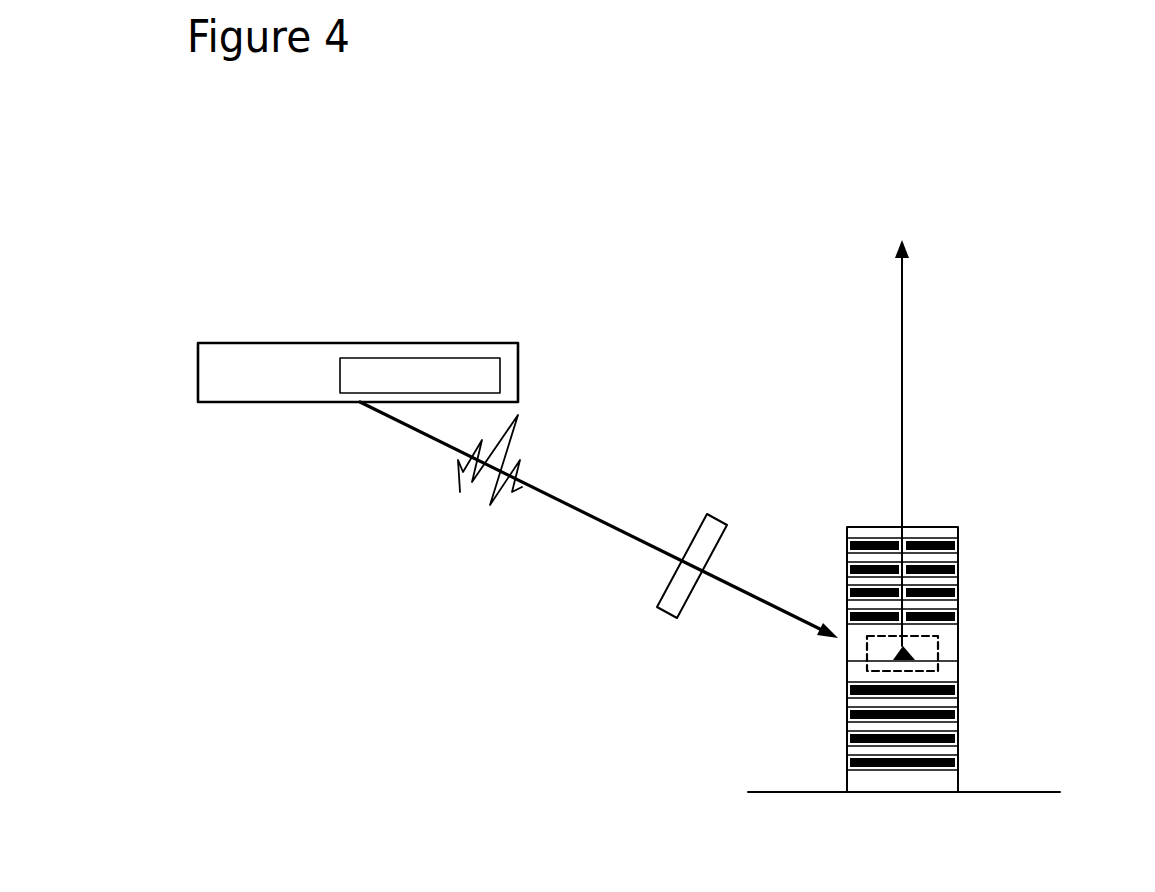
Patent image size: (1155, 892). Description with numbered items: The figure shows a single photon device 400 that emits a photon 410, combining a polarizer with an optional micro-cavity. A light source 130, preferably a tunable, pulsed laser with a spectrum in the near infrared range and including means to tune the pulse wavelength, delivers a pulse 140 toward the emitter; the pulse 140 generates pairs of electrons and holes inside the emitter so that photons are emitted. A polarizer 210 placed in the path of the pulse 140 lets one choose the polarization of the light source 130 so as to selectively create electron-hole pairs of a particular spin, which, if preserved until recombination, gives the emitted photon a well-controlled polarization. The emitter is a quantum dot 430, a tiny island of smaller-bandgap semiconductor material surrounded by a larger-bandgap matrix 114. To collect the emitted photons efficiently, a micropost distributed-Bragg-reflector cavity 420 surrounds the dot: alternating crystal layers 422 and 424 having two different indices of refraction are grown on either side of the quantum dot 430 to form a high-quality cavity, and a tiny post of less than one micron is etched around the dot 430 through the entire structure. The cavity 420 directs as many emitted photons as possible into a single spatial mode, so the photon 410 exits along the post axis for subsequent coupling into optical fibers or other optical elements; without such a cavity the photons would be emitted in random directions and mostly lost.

The single photon device 400 is at (400, 222).
The light source 130 is at (297, 402).
The pulse 140 is at (460, 492).
The polarizer 210 is at (661, 610).
The photon 410 is at (902, 377).
The micropost distributed-Bragg-reflector (DBR) cavity 420 is at (932, 604).
The crystal layer 422 is at (988, 577).
The crystal layer 424 is at (988, 732).
The quantum dot 430 is at (915, 658).
The larger-bandgap matrix 114 is at (912, 671).